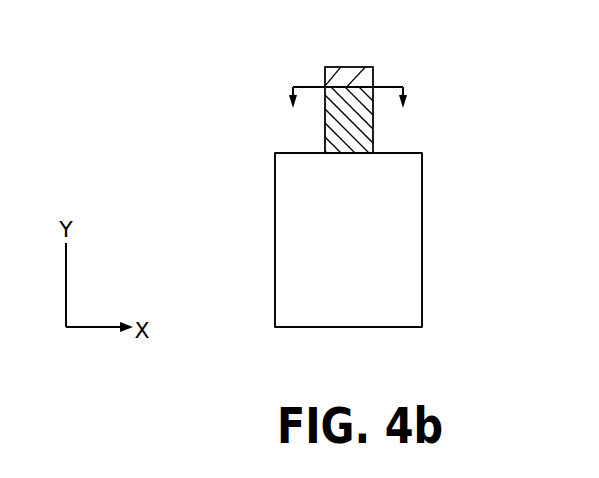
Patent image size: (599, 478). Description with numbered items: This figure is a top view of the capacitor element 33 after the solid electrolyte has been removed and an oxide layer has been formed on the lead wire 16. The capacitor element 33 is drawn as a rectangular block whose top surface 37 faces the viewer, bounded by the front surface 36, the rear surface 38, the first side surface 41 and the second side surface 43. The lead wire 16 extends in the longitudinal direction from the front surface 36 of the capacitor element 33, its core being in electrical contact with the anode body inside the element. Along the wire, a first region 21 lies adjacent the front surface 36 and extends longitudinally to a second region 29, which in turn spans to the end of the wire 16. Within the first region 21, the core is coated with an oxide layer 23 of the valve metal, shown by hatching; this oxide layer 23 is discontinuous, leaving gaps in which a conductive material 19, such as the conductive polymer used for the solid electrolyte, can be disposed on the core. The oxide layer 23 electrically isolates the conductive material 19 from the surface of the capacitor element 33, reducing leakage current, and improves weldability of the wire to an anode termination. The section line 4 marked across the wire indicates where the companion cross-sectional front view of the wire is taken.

The line 4- 4 is at (352, 98).
The lead wire 16 is at (250, 108).
The conductive material 19 is at (365, 73).
The first region 21 is at (315, 138).
The oxide layer 23 is at (367, 128).
The second region 29 is at (329, 58).
The capacitor element 33 is at (400, 272).
The front surface 36 is at (403, 153).
The top surface 37 is at (348, 240).
The rear surface 38 is at (382, 327).
The first side surface 41 is at (275, 240).
The second side surface 43 is at (422, 207).